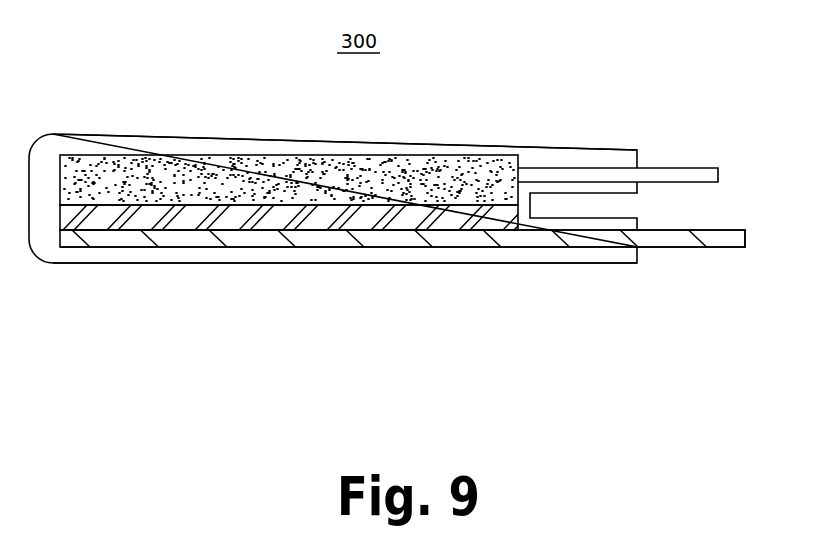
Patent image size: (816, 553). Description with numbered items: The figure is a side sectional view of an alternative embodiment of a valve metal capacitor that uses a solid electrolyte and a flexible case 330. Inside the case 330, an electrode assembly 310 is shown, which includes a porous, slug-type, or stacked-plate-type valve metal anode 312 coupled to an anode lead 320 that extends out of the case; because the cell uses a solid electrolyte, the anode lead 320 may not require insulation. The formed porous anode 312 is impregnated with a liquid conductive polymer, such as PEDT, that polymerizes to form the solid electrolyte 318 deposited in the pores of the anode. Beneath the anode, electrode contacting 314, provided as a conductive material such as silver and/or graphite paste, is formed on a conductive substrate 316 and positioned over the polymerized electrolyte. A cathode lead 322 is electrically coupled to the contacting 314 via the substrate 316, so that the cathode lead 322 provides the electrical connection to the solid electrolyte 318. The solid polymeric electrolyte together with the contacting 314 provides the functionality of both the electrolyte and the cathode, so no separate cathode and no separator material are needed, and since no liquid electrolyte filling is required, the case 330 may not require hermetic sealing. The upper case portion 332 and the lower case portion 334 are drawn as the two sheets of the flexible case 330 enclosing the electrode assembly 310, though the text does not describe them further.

The electrochemical cell stack 310 is at (133, 153).
The first electrode layer 312 is at (435, 178).
The separator layer 314 is at (130, 221).
The second electrode layer 316 is at (423, 240).
The interface layer 318 is at (290, 230).
The first tab 320 is at (692, 168).
The second tab 322 is at (680, 247).
The first enclosure layer 330 is at (278, 142).
The enclosure 332 is at (577, 145).
The second enclosure layer 334 is at (545, 263).